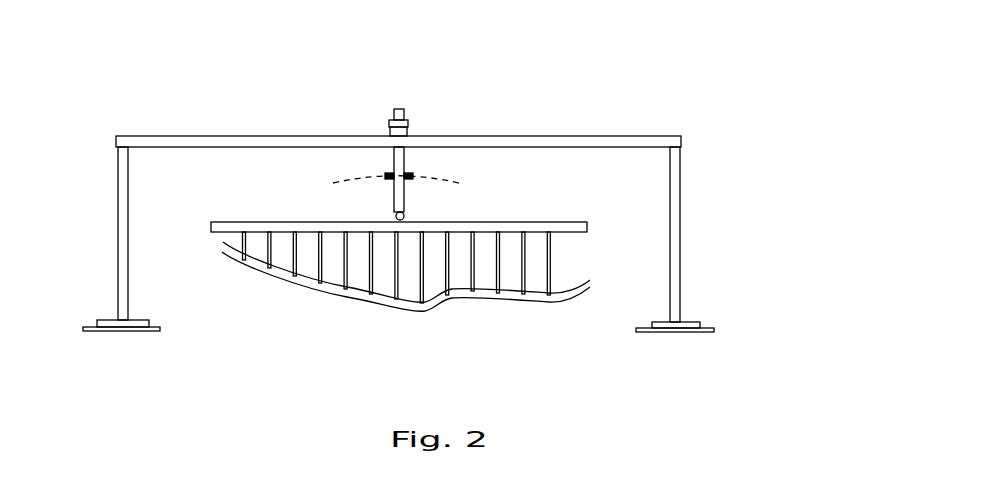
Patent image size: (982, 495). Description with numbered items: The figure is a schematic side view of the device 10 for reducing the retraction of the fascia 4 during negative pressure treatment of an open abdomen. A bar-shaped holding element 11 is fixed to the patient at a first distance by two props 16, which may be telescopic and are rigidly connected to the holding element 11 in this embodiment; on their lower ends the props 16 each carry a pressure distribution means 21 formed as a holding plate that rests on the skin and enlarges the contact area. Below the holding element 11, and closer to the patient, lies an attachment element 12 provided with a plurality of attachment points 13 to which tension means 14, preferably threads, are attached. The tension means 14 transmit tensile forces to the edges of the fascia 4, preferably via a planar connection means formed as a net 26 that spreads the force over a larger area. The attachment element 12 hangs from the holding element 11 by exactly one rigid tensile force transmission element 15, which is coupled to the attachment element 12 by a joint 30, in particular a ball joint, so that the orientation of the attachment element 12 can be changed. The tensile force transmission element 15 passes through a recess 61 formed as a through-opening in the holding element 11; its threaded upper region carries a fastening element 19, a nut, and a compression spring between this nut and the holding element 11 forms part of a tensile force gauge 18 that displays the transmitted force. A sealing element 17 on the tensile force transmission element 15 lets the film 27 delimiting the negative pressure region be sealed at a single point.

The device 10 is at (652, 65).
The holding element 11 is at (533, 145).
The attachment element 12 is at (557, 226).
The attachment points 13 is at (375, 237).
The tension means 14 is at (293, 250).
The tensile force transmission element 15 is at (399, 158).
The props 16 is at (118, 233).
The sealing element 17 is at (408, 178).
The tensile force gauge 18 is at (407, 132).
The fastening element 19 is at (400, 122).
The pressure distribution means 21 is at (104, 323).
The net 26 is at (557, 292).
The film 27 is at (343, 180).
The joint 30 is at (396, 213).
The fascia 4 is at (441, 306).
The recess 61 is at (383, 126).